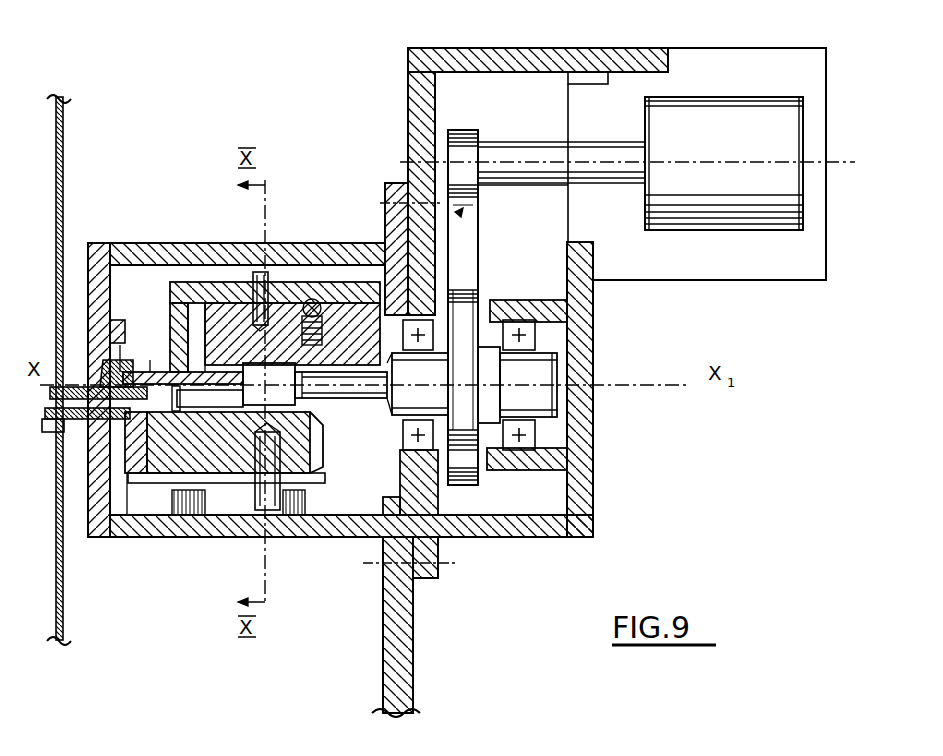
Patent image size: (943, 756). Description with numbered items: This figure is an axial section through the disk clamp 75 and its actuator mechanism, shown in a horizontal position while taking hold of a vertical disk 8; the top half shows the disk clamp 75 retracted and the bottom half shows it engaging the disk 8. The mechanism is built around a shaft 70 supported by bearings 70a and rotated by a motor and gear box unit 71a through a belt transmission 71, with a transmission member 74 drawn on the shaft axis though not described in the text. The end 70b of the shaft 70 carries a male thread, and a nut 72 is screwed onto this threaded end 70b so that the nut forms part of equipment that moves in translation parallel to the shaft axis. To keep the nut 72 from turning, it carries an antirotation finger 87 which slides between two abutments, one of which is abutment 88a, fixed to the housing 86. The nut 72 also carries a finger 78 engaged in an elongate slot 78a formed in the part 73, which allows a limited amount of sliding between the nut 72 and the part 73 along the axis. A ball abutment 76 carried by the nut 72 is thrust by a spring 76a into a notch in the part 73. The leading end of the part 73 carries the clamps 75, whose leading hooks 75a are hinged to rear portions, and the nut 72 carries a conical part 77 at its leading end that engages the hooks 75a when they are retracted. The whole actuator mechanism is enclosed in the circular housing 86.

The disk 8 is at (68, 134).
The shaft 70 is at (548, 368).
The bearings 70a is at (528, 338).
The threaded end of the shaft 70b is at (262, 400).
The belt transmission 71 is at (447, 208).
The motor and gear box unit 71a is at (770, 120).
The nut 72 is at (196, 300).
The part 73 is at (158, 262).
The gear 74 is at (636, 392).
The disk clamp 75 is at (62, 437).
The leading hooks 75a is at (106, 376).
The ball abutment 76 is at (294, 272).
The spring 76a is at (318, 300).
The conical part 77 is at (113, 278).
The finger 78 is at (268, 280).
The elongate slot 78a is at (236, 272).
The housing 86 is at (338, 522).
The antirotation finger 87 is at (266, 482).
The abutment 88a is at (228, 476).